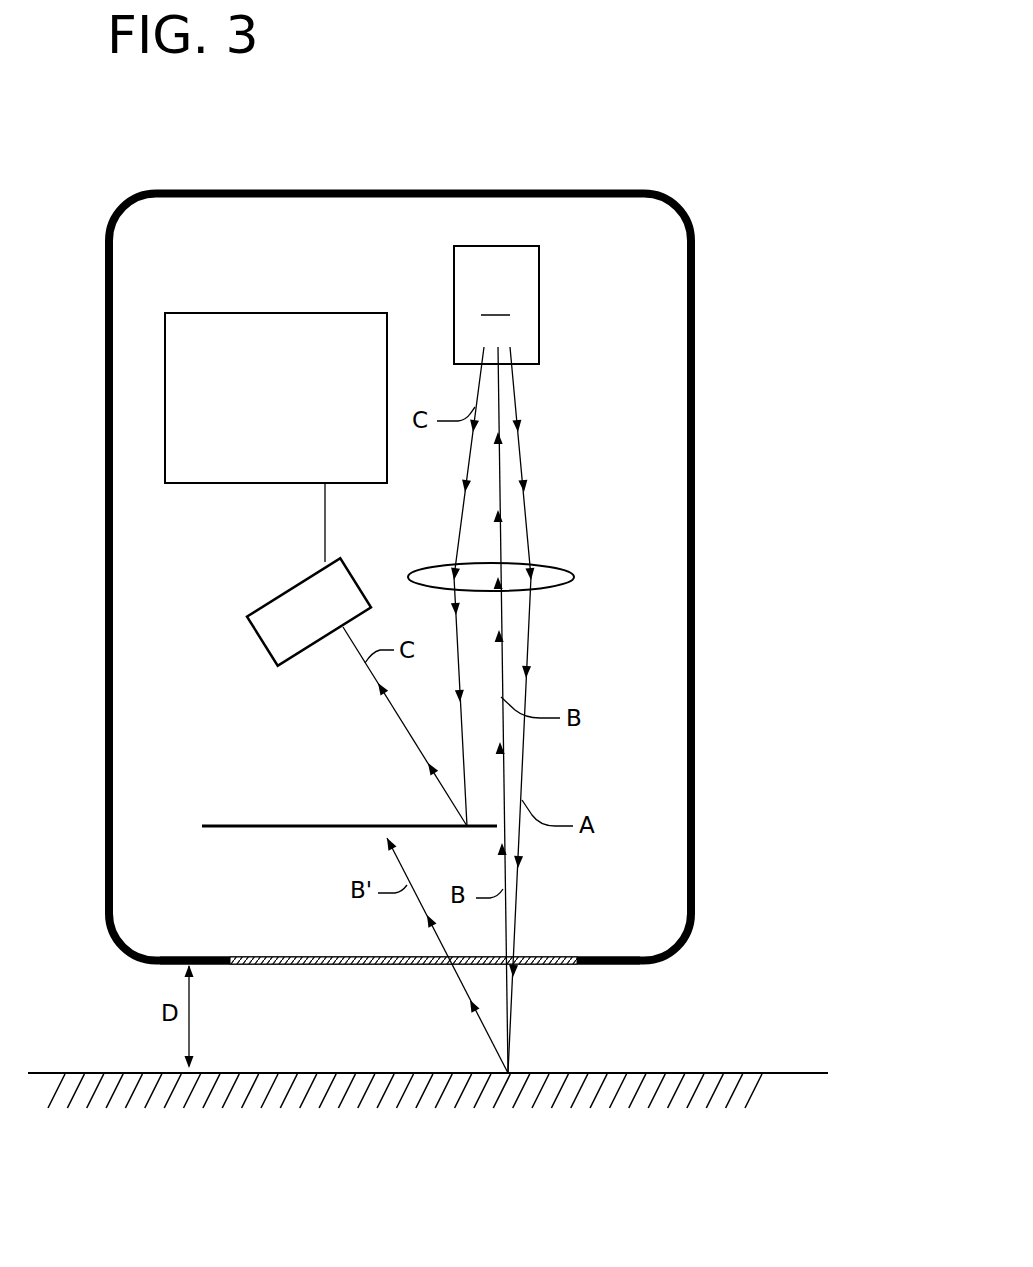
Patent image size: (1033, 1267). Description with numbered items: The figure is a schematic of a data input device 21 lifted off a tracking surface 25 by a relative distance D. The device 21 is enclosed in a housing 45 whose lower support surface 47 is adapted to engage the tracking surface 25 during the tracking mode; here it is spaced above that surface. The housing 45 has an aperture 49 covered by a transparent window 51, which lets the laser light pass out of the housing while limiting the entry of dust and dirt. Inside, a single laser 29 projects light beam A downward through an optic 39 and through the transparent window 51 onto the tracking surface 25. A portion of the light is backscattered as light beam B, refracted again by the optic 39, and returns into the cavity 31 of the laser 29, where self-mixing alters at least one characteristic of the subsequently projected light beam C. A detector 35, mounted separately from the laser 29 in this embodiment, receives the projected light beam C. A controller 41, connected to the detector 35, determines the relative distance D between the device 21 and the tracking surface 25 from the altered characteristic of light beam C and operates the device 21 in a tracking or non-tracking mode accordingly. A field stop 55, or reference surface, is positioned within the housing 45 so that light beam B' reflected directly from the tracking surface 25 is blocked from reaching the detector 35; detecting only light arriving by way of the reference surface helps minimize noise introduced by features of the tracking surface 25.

The data input device 21 is at (475, 577).
The tracking surface 25 is at (813, 1072).
The laser 29 is at (535, 305).
The cavity 31 is at (496, 303).
The detector 35 is at (309, 611).
The optic 39 is at (555, 566).
The controller 41 is at (276, 398).
The housing 45 is at (694, 513).
The support surface 47 is at (625, 966).
The aperture 49 is at (423, 942).
The transparent window 51 is at (343, 957).
The field stop 55 is at (305, 825).